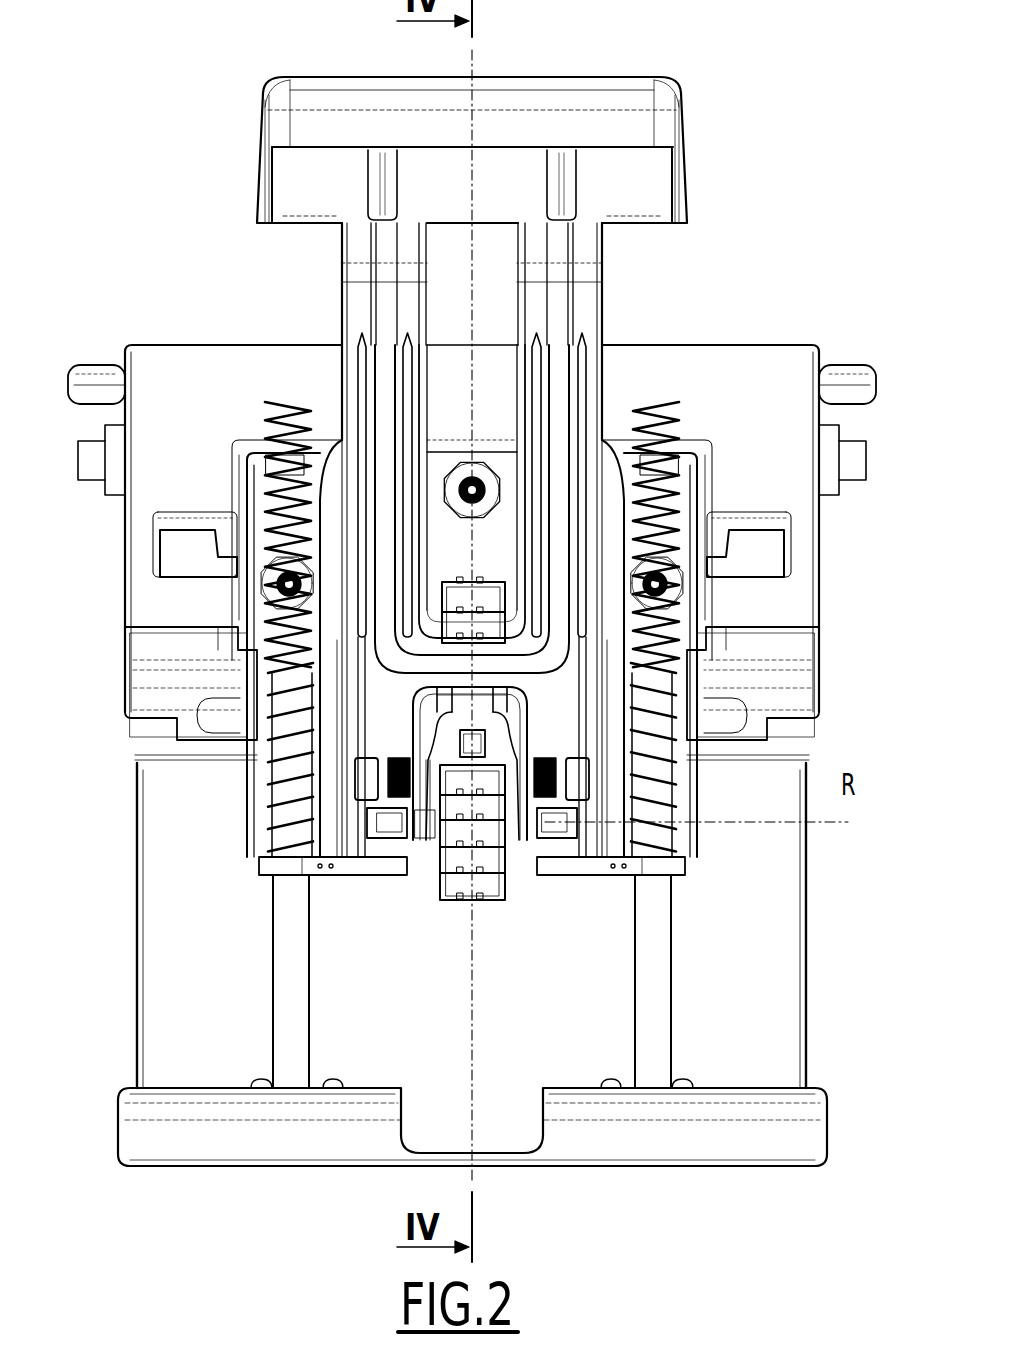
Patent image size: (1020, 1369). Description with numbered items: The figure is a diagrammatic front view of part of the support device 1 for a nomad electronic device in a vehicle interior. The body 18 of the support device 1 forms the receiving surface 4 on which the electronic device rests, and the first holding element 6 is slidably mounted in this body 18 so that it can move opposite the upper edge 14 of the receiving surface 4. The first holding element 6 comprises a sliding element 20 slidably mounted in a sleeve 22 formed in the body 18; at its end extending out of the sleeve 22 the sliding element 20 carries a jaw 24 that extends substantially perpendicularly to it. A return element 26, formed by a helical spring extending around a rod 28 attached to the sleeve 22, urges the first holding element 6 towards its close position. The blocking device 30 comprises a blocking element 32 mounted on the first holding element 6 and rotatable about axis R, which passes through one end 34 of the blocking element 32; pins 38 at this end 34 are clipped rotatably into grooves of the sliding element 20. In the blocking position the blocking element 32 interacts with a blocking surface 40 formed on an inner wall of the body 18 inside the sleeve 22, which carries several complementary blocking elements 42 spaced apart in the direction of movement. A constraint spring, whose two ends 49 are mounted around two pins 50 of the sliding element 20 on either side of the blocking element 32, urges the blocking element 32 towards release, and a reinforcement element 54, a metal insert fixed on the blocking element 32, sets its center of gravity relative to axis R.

The support device 1 is at (850, 303).
The receiving surface 4 is at (656, 945).
The first holding element 6 is at (677, 182).
The upper edge 14 is at (485, 332).
The body 18 is at (183, 928).
The sliding element 20 is at (600, 455).
The sleeve 22 is at (290, 797).
The jaw 24 is at (297, 182).
The return element 26 is at (237, 637).
The rod 28 is at (292, 702).
The blocking device 30 is at (430, 780).
The blocking element 32 is at (440, 735).
The end 34 is at (428, 812).
The pin 38 is at (393, 828).
The blocking surface 40 is at (483, 830).
The complementary blocking elements 42 is at (473, 852).
The ends 49 is at (540, 763).
The pin 50 is at (423, 815).
The reinforcement element 54 is at (475, 747).